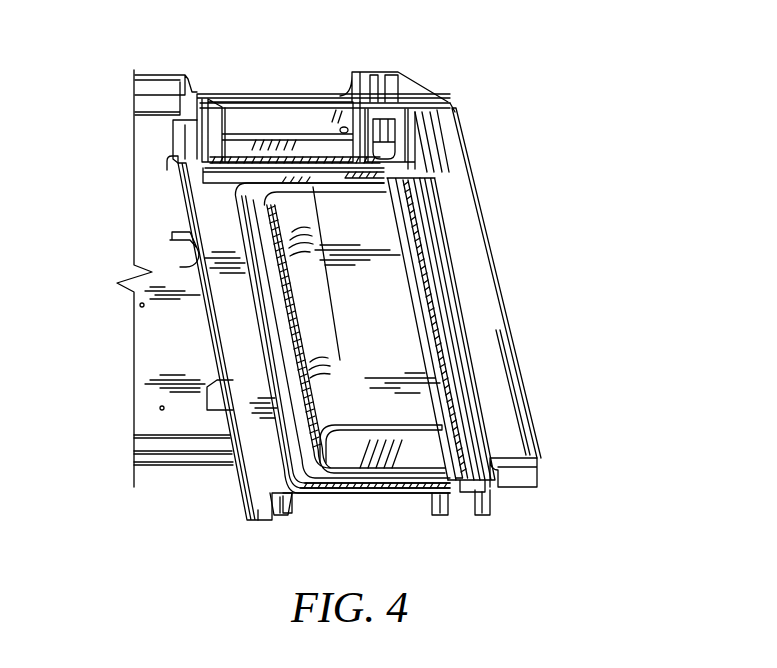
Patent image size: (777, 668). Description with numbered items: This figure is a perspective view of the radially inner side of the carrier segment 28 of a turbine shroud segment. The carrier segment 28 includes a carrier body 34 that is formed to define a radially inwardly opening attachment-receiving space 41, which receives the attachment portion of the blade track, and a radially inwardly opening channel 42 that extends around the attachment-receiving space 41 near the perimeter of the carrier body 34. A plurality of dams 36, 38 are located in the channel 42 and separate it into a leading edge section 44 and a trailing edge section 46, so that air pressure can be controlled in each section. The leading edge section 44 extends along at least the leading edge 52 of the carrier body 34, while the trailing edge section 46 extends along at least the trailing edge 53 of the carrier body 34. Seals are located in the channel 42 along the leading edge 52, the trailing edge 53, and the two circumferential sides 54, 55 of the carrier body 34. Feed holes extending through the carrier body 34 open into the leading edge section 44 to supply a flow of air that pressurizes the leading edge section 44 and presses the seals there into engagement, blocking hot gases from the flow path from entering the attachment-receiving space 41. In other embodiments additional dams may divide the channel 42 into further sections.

The carrier segment 28 is at (564, 116).
The carrier body 34 is at (285, 74).
The dam 36 is at (390, 184).
The dam 38 is at (455, 495).
The attachment-receiving space 41 is at (365, 418).
The channel 42 is at (270, 410).
The leading edge section 44 is at (272, 338).
The trailing edge section 46 is at (463, 395).
The leading edge 52 is at (205, 332).
The trailing edge 53 is at (462, 343).
The circumferential side 54 is at (305, 148).
The circumferential side 55 is at (385, 498).